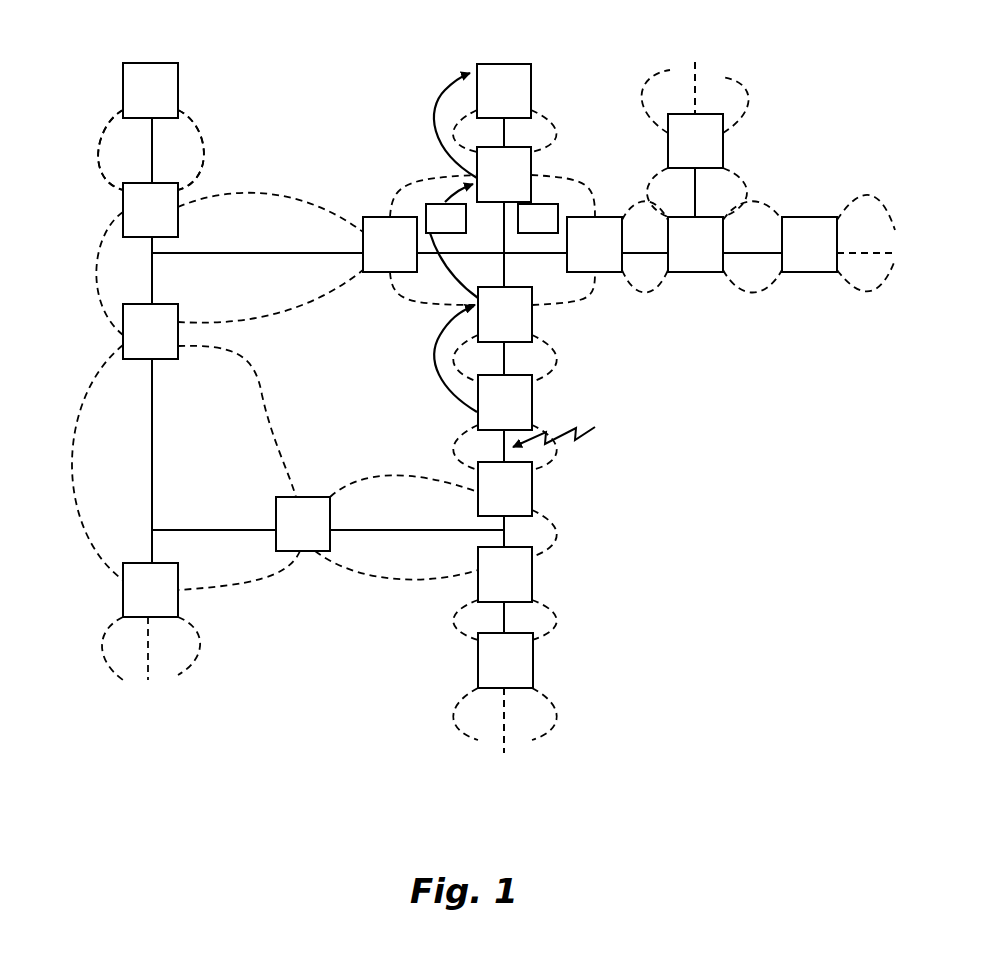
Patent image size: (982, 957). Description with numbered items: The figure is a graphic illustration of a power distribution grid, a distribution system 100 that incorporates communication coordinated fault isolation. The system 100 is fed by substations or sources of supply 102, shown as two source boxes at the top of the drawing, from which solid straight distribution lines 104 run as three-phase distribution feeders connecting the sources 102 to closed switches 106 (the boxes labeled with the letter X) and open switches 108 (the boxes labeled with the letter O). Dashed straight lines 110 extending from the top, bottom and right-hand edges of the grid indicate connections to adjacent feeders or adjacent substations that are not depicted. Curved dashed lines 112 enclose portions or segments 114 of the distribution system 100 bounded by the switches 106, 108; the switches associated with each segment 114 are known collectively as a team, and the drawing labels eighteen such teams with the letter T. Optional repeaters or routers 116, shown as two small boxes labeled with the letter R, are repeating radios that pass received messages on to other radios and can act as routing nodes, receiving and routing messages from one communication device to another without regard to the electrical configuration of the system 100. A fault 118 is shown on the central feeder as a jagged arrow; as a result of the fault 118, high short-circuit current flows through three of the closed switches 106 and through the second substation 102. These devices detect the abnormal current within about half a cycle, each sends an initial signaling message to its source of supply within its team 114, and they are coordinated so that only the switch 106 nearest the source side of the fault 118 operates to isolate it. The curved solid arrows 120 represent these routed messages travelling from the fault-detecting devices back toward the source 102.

The distribution system 100 is at (748, 422).
The sources of supply 102 is at (150, 63).
The distribution lines 104 is at (152, 152).
The closed switches 106 is at (518, 147).
The open switches 108 is at (165, 183).
The dashed straight lines 110 is at (695, 73).
The curved dashed lines 112 is at (105, 120).
The segments 114 is at (120, 162).
The repeaters/routers 116 is at (445, 203).
The fault 118 is at (543, 453).
The routing path 120 is at (432, 110).